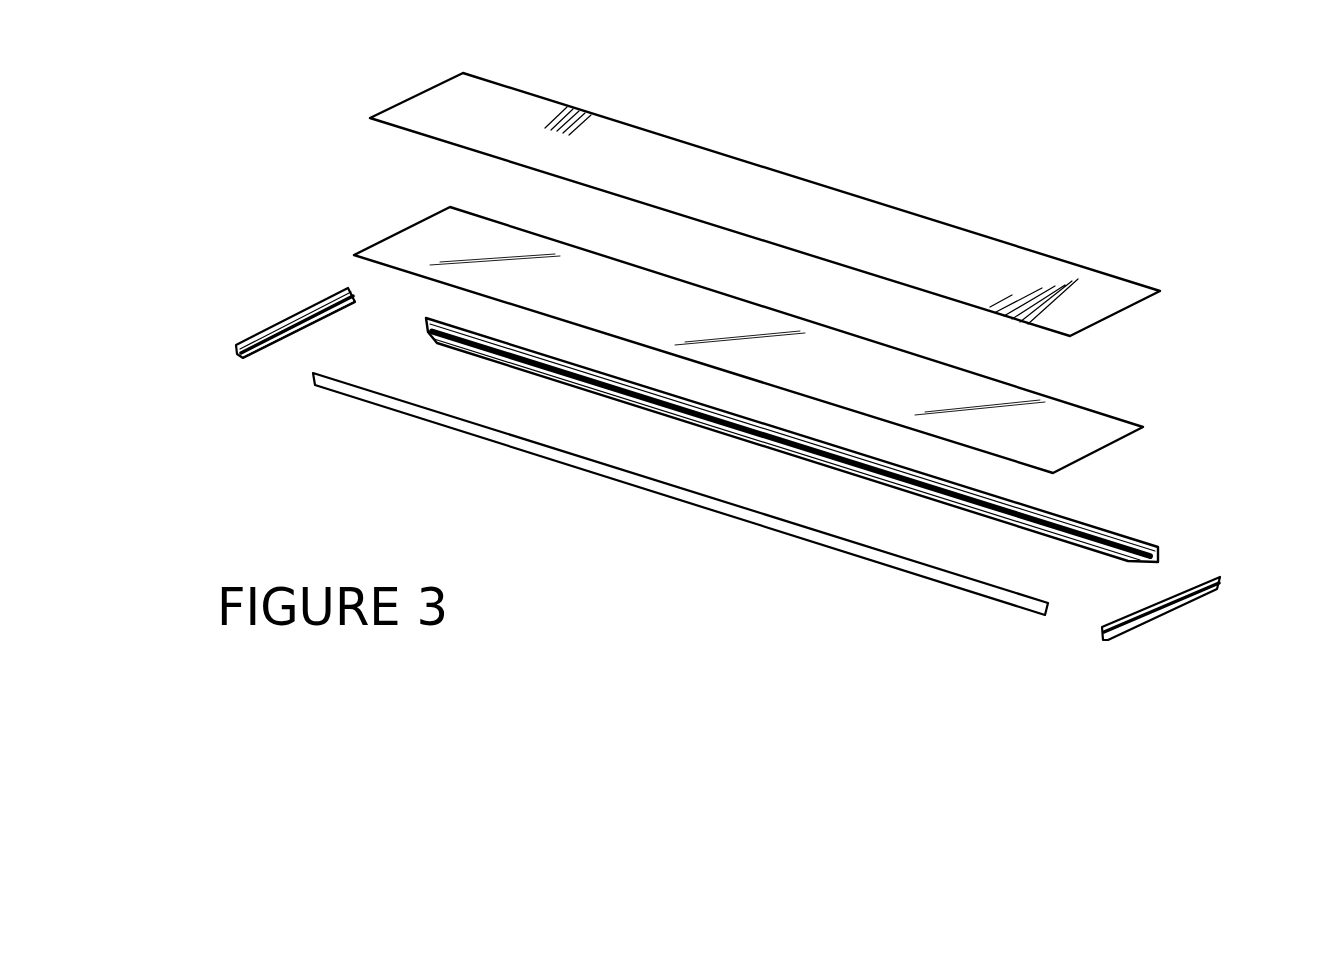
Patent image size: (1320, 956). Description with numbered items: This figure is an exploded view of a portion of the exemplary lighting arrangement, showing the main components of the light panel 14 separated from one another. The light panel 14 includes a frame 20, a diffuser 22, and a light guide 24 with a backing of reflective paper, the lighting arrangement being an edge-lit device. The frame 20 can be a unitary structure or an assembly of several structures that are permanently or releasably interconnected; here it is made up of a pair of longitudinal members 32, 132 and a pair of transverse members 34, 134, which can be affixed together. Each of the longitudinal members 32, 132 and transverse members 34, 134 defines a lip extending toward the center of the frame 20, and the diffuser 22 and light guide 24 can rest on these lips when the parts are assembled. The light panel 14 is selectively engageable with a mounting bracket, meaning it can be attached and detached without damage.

The light panel 14 is at (748, 528).
The frame 20 is at (247, 398).
The diffuser 22 is at (1112, 453).
The light guide 24 is at (1117, 322).
The longitudinal member 32 is at (735, 432).
The transverse member 34 is at (285, 318).
The longitudinal member 132 is at (435, 418).
The transverse member 134 is at (1153, 615).